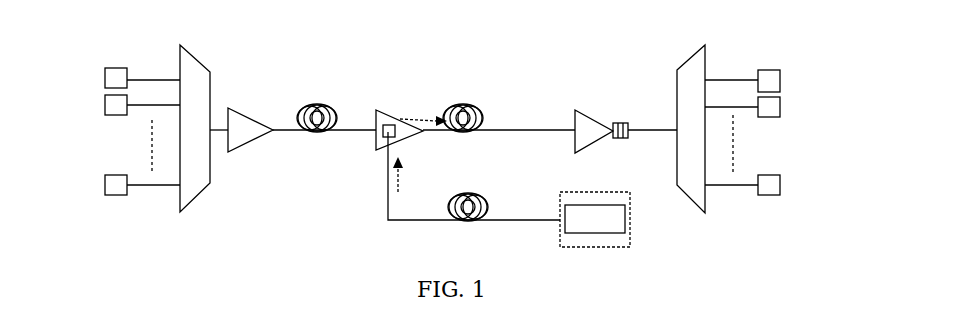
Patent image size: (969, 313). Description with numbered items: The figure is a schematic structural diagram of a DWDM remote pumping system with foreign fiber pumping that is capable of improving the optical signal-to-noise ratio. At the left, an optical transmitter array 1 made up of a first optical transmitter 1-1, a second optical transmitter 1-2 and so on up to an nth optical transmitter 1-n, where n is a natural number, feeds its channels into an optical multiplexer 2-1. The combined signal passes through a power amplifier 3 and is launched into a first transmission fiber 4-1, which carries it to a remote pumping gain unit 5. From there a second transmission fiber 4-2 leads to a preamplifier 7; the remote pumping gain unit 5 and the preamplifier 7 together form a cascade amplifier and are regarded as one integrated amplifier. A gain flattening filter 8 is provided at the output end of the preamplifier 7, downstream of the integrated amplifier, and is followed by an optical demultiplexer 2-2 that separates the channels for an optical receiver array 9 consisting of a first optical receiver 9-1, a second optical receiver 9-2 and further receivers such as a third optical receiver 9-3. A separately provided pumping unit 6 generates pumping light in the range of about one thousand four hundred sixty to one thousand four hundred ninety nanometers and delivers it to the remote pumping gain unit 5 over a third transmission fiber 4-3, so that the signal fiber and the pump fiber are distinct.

The optical transmitter array 1 is at (51, 68).
The first optical transmitter 1-1 is at (105, 80).
The second optical transmitter 1-2 is at (105, 105).
The nth optical transmitter 1-n is at (105, 185).
The optical multiplexer 2-1 is at (182, 60).
The optical demultiplexer 2-2 is at (696, 70).
The power amplifier 3 is at (245, 142).
The first transmission fiber 4-1 is at (325, 104).
The second transmission fiber 4-2 is at (472, 105).
The third transmission fiber 4-3 is at (478, 193).
The remote pumping gain unit 5 is at (383, 120).
The pumping unit 6 is at (585, 201).
The preamplifier 7 is at (595, 122).
The gain flattening filter 8 is at (628, 123).
The optical receiver array 9 is at (842, 68).
The first optical receiver 9-1 is at (780, 78).
The second optical receiver 9-2 is at (780, 105).
The third optical receiver 9-3 is at (780, 183).